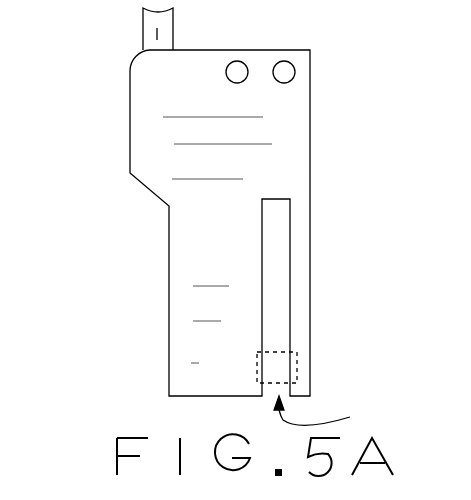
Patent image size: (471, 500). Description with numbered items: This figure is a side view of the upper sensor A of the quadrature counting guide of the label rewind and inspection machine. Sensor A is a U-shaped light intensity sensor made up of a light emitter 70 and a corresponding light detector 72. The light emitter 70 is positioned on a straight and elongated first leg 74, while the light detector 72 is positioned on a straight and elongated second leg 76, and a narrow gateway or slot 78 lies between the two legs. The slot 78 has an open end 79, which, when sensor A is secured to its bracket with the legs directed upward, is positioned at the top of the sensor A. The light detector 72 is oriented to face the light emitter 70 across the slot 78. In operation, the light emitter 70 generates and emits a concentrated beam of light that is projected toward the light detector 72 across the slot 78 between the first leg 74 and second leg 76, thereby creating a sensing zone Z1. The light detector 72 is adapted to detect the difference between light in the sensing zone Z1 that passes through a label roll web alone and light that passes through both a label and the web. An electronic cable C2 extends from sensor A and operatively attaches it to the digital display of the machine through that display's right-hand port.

The sensor A is at (146, 216).
The electronic cable C2 is at (152, 33).
The first leg 74 is at (200, 289).
The light emitter 70 is at (257, 370).
The second leg 76 is at (300, 247).
The slot 78 is at (277, 278).
The sensing zone Z1 is at (277, 364).
The light detector 72 is at (297, 372).
The open end 79 is at (324, 416).